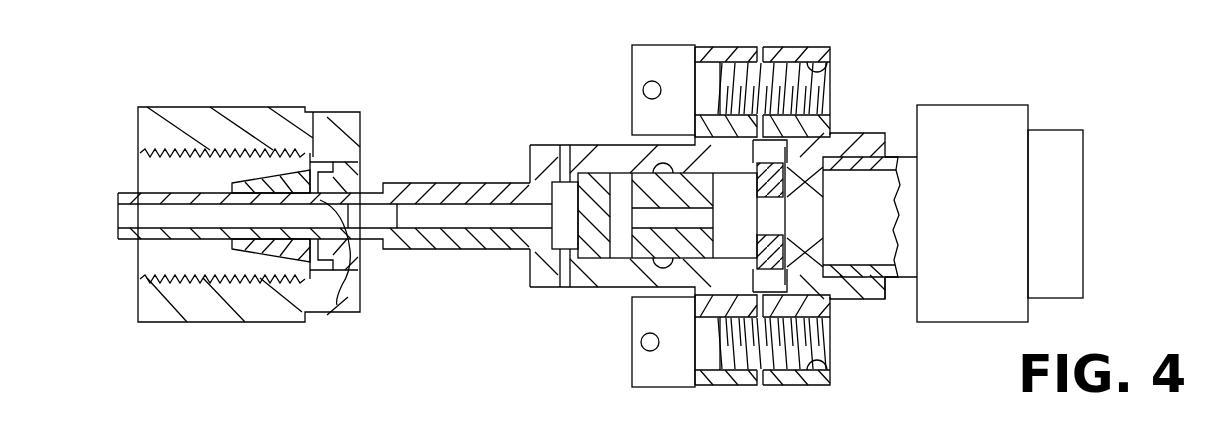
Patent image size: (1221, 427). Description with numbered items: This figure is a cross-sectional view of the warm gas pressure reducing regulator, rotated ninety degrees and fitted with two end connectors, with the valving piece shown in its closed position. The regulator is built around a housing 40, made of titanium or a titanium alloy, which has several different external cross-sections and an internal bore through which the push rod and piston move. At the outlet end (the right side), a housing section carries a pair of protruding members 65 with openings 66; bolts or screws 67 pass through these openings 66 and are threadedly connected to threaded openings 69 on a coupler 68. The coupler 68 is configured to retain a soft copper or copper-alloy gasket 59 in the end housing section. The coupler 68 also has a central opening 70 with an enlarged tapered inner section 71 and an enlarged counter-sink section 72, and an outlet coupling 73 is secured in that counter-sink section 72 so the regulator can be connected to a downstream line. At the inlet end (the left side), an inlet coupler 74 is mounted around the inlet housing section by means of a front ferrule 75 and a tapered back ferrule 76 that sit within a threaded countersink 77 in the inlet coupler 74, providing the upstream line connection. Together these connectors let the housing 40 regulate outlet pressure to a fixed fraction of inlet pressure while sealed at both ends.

The housing 40 is at (538, 114).
The gasket 59 is at (740, 200).
The protruding members 65 is at (730, 43).
The openings 66 is at (708, 72).
The bolts or screws 67 is at (632, 65).
The coupler 68 is at (810, 43).
The threaded openings 69 is at (822, 72).
The central opening 70 is at (820, 219).
The enlarged tapered inner section 71 is at (823, 133).
The enlarged counter-sink section 72 is at (868, 297).
The outlet coupling 73 is at (988, 223).
The inlet coupler 74 is at (233, 107).
The front ferrule 75 is at (337, 303).
The tapered back ferrule 76 is at (242, 290).
The threaded countersink 77 is at (153, 257).